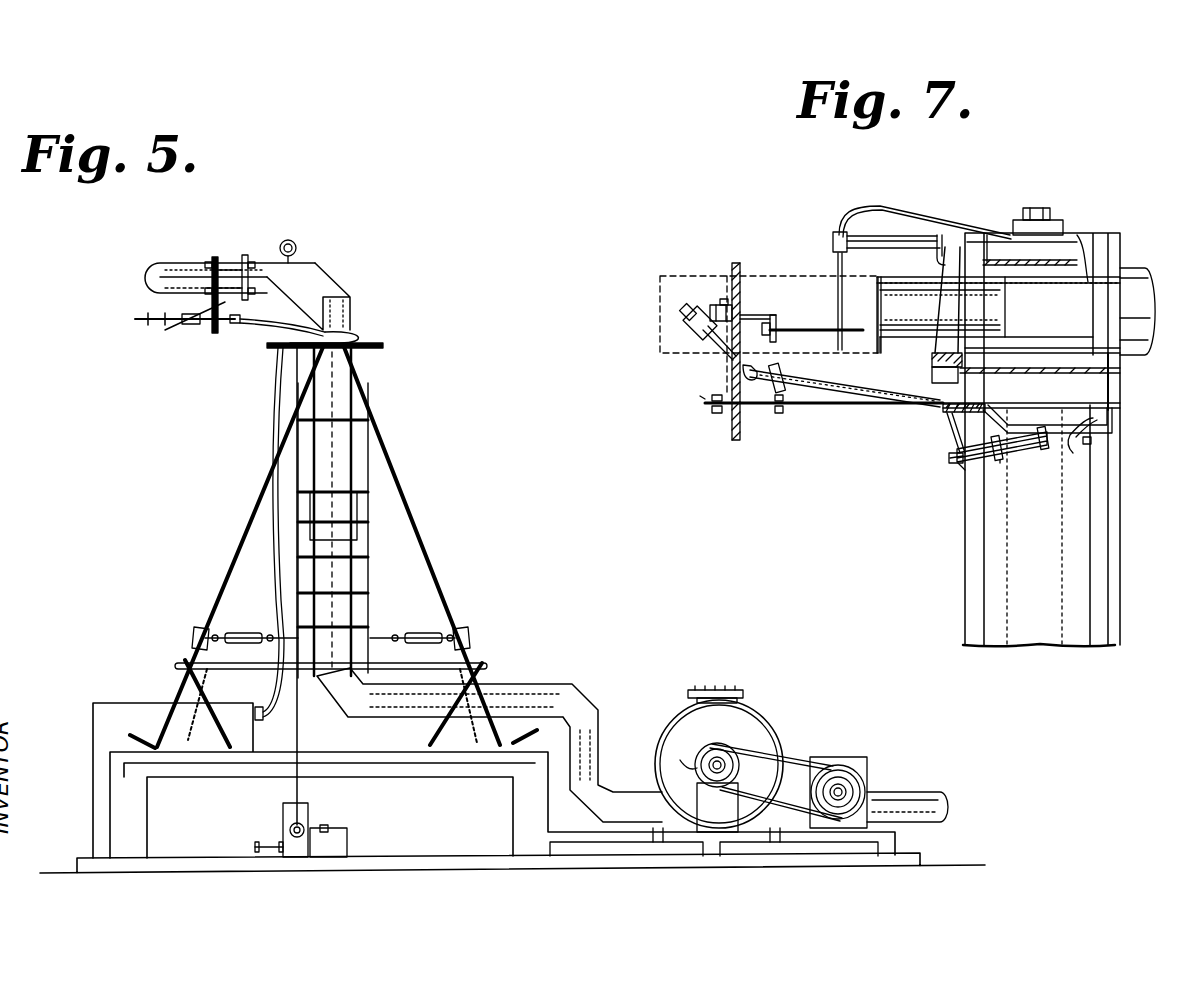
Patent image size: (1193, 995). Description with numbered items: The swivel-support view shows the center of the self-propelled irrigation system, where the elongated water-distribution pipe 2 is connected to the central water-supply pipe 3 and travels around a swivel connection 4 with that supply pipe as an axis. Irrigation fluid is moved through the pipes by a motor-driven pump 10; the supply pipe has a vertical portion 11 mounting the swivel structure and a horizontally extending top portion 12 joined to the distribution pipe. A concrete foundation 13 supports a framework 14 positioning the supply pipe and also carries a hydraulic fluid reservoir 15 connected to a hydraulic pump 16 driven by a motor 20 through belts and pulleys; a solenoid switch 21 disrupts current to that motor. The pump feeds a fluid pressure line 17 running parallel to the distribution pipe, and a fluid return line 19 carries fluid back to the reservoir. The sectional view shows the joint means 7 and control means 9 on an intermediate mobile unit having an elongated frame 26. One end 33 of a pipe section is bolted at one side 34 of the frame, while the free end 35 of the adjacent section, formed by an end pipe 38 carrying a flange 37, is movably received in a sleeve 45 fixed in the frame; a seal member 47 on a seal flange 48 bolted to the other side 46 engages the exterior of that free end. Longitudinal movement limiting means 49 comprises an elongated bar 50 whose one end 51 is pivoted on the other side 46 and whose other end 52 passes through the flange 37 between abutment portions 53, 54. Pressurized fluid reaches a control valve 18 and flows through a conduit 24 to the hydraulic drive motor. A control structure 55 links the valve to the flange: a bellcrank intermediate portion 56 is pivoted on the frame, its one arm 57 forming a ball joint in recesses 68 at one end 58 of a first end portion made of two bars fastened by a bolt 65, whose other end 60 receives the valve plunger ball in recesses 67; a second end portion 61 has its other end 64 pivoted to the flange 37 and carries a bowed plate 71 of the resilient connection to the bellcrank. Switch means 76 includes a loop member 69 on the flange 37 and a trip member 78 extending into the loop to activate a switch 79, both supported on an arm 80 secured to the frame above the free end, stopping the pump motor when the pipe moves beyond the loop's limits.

In FIG. 5, the water-distribution pipe 2 is at (184, 266).
In FIG. 7, the water-distribution pipe 2 is at (890, 362).
In FIG. 5, the central water-supply pipe 3 is at (262, 263).
In FIG. 5, the swivel connection 4 is at (354, 292).
In FIG. 7, the joint means 7 is at (1114, 228).
In FIG. 7, the control means 9 is at (950, 458).
In FIG. 5, the motor-driven pump 10 is at (877, 740).
In FIG. 5, the vertical portion 11 is at (340, 613).
In FIG. 5, the horizontally extending top portion 12 is at (230, 262).
In FIG. 5, the foundation 13 is at (76, 856).
In FIG. 5, the framework 14 is at (382, 418).
In FIG. 5, the hydraulic fluid reservoir 15 is at (95, 703).
In FIG. 5, the hydraulic pump 16 is at (306, 820).
In FIG. 5, the fluid pressure line 17 is at (150, 323).
In FIG. 7, the control valve 18 is at (1093, 442).
In FIG. 5, the fluid return line 19 is at (155, 319).
In FIG. 5, the motor 20 is at (350, 832).
In FIG. 5, the solenoid switch 21 is at (333, 826).
In FIG. 7, the conduit 24 is at (1073, 455).
In FIG. 7, the elongated frame 26 is at (958, 567).
In FIG. 7, the one end 33 is at (1135, 277).
In FIG. 7, the one side 34 is at (1118, 360).
In FIG. 7, the free end 35 is at (882, 278).
In FIG. 7, the flange 37 is at (738, 440).
In FIG. 7, the end pipe 38 is at (920, 269).
In FIG. 7, the sleeve 45 is at (1052, 372).
In FIG. 7, the other side 46 is at (948, 303).
In FIG. 7, the seal member 47 is at (935, 360).
In FIG. 7, the seal flange 48 is at (940, 240).
In FIG. 7, the longitudinal movement limiting means 49 is at (697, 402).
In FIG. 7, the elongated bar 50 is at (868, 407).
In FIG. 7, the one end 51 is at (940, 410).
In FIG. 7, the other end 52 is at (705, 395).
In FIG. 7, the abutment portion 53 is at (718, 413).
In FIG. 7, the abutment portion 54 is at (780, 413).
In FIG. 7, the control structure 55 is at (857, 383).
In FIG. 7, the intermediate portion 56 is at (823, 355).
In FIG. 7, the one arm 57 is at (950, 436).
In FIG. 7, the one end 58 is at (968, 470).
In FIG. 7, the other end 60 is at (1040, 450).
In FIG. 7, the second end portion 61 is at (721, 350).
In FIG. 7, the other end 64 is at (698, 323).
In FIG. 7, the bolt 65 is at (1003, 462).
In FIG. 7, the recesses 67 is at (1000, 450).
In FIG. 7, the recesses 68 is at (960, 462).
In FIG. 7, the loop member 69 is at (810, 328).
In FIG. 7, the bowed plate 71 is at (760, 355).
In FIG. 7, the switch means 76 is at (763, 226).
In FIG. 7, the trip member 78 is at (838, 265).
In FIG. 7, the switch 79 is at (833, 240).
In FIG. 7, the arm 80 is at (870, 226).